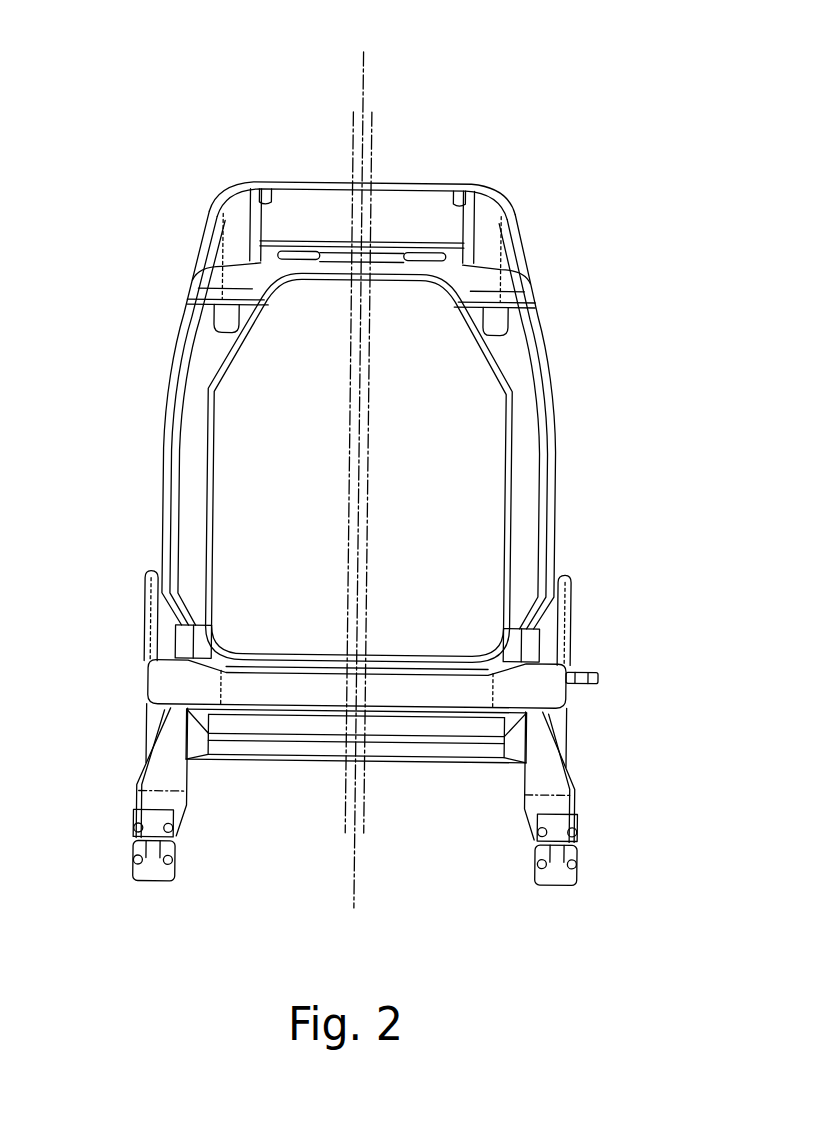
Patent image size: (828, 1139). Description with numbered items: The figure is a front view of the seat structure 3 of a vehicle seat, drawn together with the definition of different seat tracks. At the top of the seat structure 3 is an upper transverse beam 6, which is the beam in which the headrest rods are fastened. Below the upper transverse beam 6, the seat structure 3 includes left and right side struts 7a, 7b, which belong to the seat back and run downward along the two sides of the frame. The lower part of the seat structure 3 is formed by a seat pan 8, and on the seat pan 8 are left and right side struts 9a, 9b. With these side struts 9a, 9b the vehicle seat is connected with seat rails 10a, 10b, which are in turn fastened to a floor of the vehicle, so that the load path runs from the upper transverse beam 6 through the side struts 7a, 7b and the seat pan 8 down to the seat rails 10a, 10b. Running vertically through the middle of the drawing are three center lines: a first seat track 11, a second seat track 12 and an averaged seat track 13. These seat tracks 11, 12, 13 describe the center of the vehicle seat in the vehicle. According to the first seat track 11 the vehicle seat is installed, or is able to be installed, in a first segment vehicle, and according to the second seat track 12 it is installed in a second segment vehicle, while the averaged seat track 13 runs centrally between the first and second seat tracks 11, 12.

The seat structure 3 is at (553, 179).
The upper transverse beam 6 is at (436, 186).
The left side strut 7a is at (165, 427).
The right side strut 7b is at (553, 460).
The seat pan 8 is at (539, 688).
The left side strut 9a is at (170, 769).
The right side strut 9b is at (553, 768).
The seat rail 10a is at (156, 872).
The seat rail 10b is at (567, 874).
The first seat track 11 is at (349, 158).
The second seat track 12 is at (371, 121).
The averaged seat track 13 is at (358, 78).